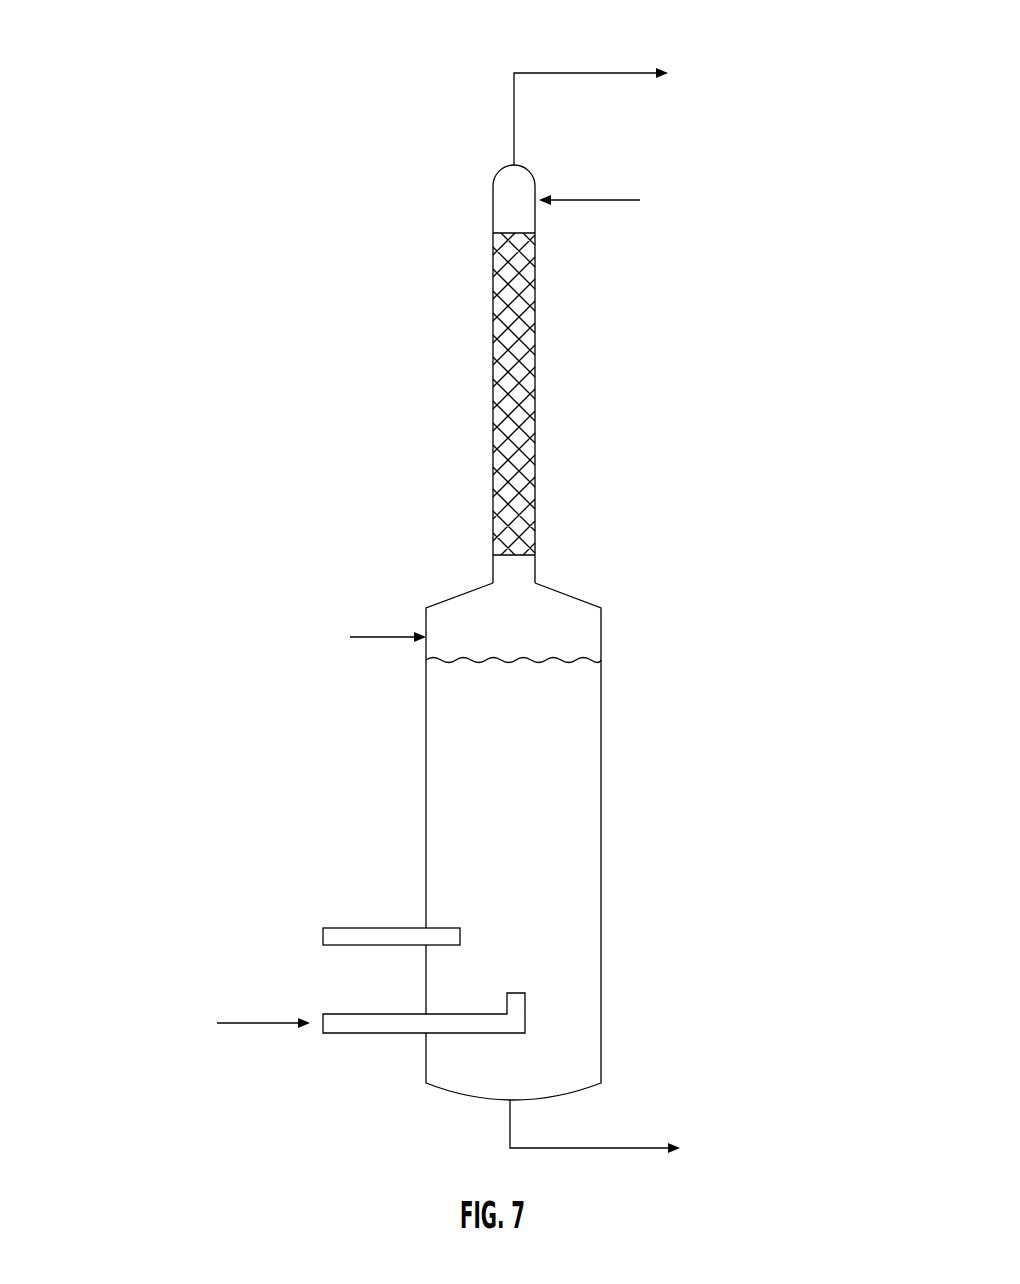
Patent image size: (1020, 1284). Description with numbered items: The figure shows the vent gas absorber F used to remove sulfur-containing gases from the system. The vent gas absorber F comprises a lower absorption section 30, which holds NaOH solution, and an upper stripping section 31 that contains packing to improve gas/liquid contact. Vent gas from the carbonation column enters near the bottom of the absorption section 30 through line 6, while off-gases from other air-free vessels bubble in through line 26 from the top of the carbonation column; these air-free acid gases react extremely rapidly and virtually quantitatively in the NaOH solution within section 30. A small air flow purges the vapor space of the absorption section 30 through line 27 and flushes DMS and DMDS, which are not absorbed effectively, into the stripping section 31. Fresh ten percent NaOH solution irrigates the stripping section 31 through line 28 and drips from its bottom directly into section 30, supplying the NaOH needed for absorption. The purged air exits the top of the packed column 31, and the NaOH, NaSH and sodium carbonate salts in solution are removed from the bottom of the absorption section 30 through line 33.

The line 6 is at (272, 1022).
The line 26 is at (363, 926).
The line 27 is at (388, 637).
The line 28 is at (593, 200).
The absorption section 30 is at (601, 836).
The stripping section 31 is at (587, 73).
The line 33 is at (625, 1148).
The vent gas absorber F is at (656, 686).